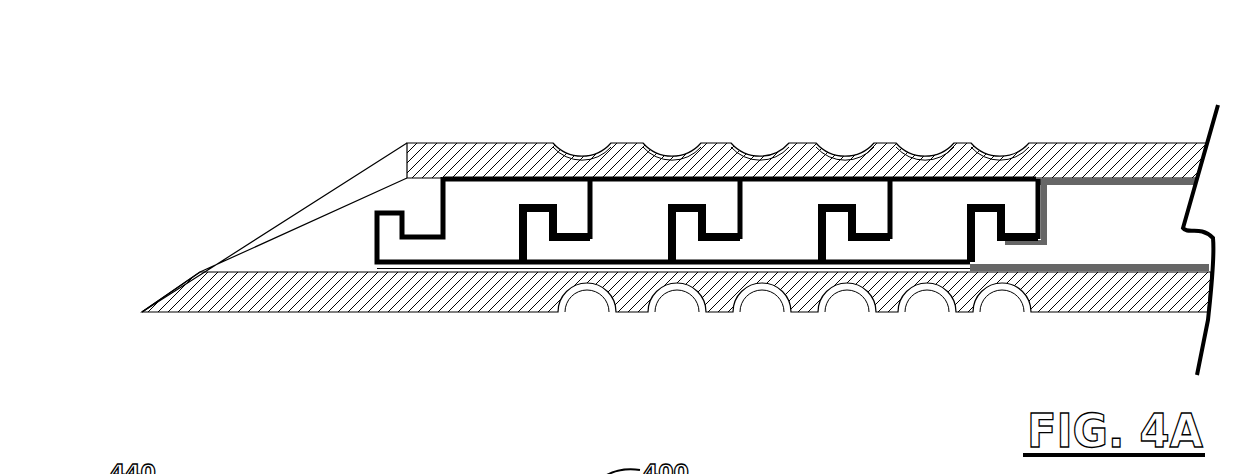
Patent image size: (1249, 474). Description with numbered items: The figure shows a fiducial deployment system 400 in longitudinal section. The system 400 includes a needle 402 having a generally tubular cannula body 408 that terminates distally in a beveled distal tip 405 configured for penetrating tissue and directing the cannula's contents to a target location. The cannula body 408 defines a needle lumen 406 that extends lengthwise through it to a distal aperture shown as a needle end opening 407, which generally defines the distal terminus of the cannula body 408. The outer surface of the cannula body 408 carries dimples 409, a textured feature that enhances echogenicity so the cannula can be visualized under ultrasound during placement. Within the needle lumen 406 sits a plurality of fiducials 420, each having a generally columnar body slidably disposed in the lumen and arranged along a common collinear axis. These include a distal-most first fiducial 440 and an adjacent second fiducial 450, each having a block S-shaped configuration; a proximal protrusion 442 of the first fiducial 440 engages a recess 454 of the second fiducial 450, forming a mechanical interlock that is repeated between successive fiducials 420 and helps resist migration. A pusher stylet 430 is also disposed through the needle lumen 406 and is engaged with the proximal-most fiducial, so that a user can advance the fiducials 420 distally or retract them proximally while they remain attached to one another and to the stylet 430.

The fiducial deployment system 400 is at (600, 80).
The needle 402 is at (1137, 140).
The beveled distal tip 405 is at (182, 329).
The needle lumen 406 is at (423, 200).
The needle end opening 407 is at (300, 188).
The cannula body 408 is at (1083, 290).
The dimples 409 is at (680, 290).
The fiducials 420 is at (930, 242).
The pusher stylet 430 is at (1107, 203).
The first fiducial 440 is at (483, 208).
The proximal protrusion 442 is at (570, 208).
The second fiducial 450 is at (633, 205).
The recess 454 is at (562, 240).